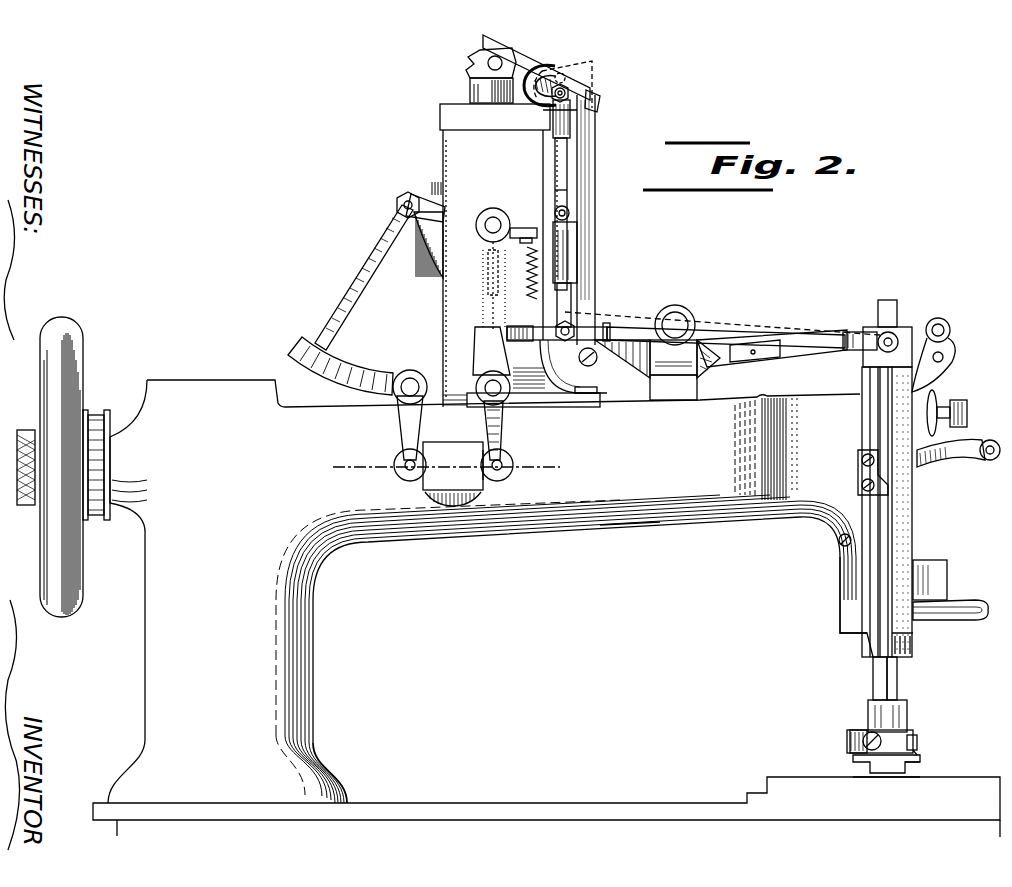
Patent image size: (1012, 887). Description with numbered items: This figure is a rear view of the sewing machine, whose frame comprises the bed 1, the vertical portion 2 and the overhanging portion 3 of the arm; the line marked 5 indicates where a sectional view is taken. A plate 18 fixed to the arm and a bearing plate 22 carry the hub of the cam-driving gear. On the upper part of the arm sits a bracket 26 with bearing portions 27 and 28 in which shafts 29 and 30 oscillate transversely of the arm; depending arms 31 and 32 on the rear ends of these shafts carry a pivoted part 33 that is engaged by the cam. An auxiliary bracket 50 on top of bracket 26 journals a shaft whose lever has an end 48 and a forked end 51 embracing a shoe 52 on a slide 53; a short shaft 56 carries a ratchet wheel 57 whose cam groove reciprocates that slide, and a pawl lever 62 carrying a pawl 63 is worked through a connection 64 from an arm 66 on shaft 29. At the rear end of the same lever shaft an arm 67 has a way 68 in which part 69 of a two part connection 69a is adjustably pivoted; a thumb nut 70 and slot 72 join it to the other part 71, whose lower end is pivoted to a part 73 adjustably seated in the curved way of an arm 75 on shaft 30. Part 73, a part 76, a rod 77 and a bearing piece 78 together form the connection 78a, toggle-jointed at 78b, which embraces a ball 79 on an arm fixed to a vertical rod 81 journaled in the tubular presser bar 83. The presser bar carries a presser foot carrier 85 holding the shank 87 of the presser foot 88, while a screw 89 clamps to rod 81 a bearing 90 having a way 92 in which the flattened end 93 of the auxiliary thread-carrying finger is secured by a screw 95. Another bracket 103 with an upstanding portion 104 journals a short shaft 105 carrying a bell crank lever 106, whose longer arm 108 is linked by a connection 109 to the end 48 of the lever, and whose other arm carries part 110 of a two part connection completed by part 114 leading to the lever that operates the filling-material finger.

The bed 1 is at (575, 806).
The vertical portion of the arm 2 is at (487, 591).
The overhanging portion of the arm 3 is at (652, 524).
The shaft 5 is at (456, 468).
The plate 18 is at (510, 478).
The bearing plate 22 is at (435, 506).
The bracket 26 is at (493, 286).
The bearing portion 27 is at (420, 380).
The bearing portion 28 is at (530, 408).
The shaft 29 is at (404, 398).
The shaft 30 is at (482, 398).
The depending arm 31 is at (502, 432).
The depending arm 32 is at (402, 437).
The part 33 is at (453, 466).
The end of lever 48 is at (598, 122).
The auxiliary bracket 50 is at (495, 255).
The forked end 51 is at (520, 62).
The shoe 52 is at (482, 56).
The slide 53 is at (470, 92).
The short shaft 56 is at (479, 226).
The ratchet wheel 57 is at (444, 262).
The pawl lever 62 is at (440, 210).
The pawl 63 is at (420, 240).
The connection 64 is at (355, 300).
The arm 66 is at (352, 370).
The arm 67 is at (570, 93).
The way 68 is at (598, 104).
The part of two part connection 69 is at (555, 150).
The two part connection 69a is at (553, 195).
The thumb nut 70 is at (568, 210).
The part of two part connection 71 is at (572, 296).
The slot 72 is at (577, 235).
The part 73 is at (535, 340).
The arm 75 is at (480, 340).
The part 76 is at (585, 338).
The rod 77 is at (773, 337).
The bearing piece 78 is at (858, 334).
The connection 78a is at (740, 322).
The toggle joint 78b is at (565, 340).
The ball 79 is at (897, 336).
The vertical shaft or rod 81 is at (866, 358).
The presser bar 83 is at (898, 675).
The presser foot carrier 85 is at (907, 706).
The shank 87 is at (860, 758).
The presser foot 88 is at (880, 776).
The screw 89 is at (847, 740).
The bearing 90 is at (906, 732).
The way 92 is at (912, 766).
The flattened end 93 is at (917, 754).
The screw 95 is at (918, 740).
The bracket 103 is at (668, 392).
The upwardly extending portion 104 is at (675, 357).
The short shaft 105 is at (675, 318).
The bell crank lever 106 is at (705, 375).
The end of bell crank lever 108 is at (618, 358).
The connection 109 is at (588, 248).
The part of two part connection 110 is at (730, 363).
The part of two part connection 114 is at (805, 352).